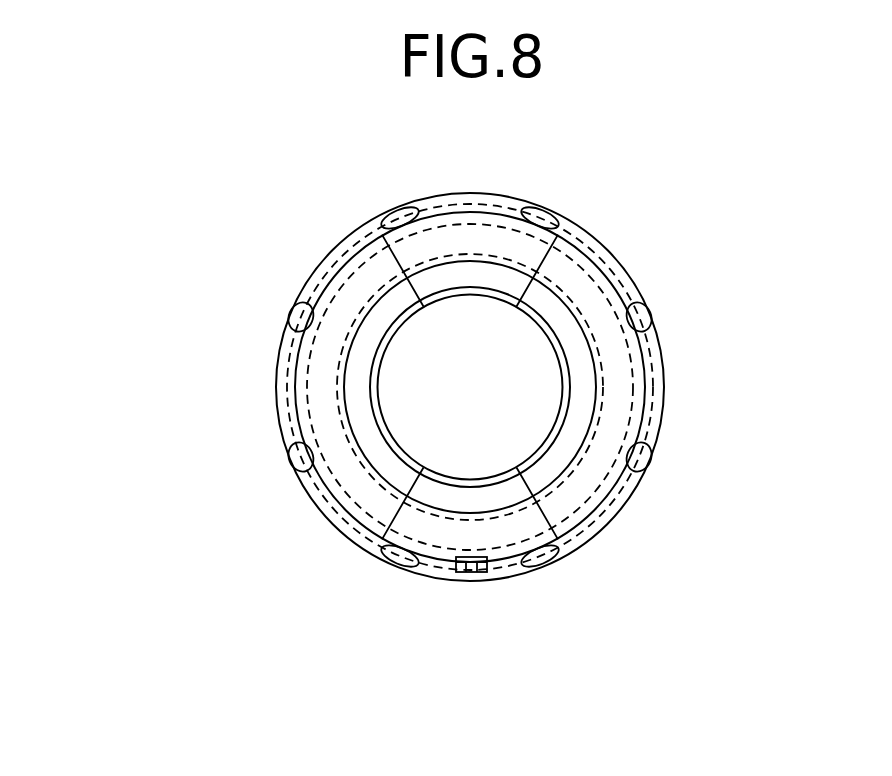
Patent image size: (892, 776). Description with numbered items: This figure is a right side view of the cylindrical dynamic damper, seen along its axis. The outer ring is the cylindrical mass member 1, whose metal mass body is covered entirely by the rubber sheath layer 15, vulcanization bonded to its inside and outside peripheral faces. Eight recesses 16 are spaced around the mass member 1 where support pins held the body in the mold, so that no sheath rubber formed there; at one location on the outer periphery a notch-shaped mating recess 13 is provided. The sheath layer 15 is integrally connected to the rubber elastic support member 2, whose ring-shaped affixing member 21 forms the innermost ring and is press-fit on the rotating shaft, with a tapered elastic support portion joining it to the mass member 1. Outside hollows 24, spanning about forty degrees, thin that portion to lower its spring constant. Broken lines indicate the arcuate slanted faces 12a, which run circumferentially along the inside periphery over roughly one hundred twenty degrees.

The mass member 1 is at (460, 188).
The rubber elastic support member 2 is at (457, 302).
The slanted face 12a is at (308, 380).
The mating recess 13 is at (471, 573).
The rubber sheath layer 15 is at (332, 253).
The recess 16 is at (398, 210).
The affixing member 21 is at (378, 455).
The outside hollow 24 is at (280, 402).